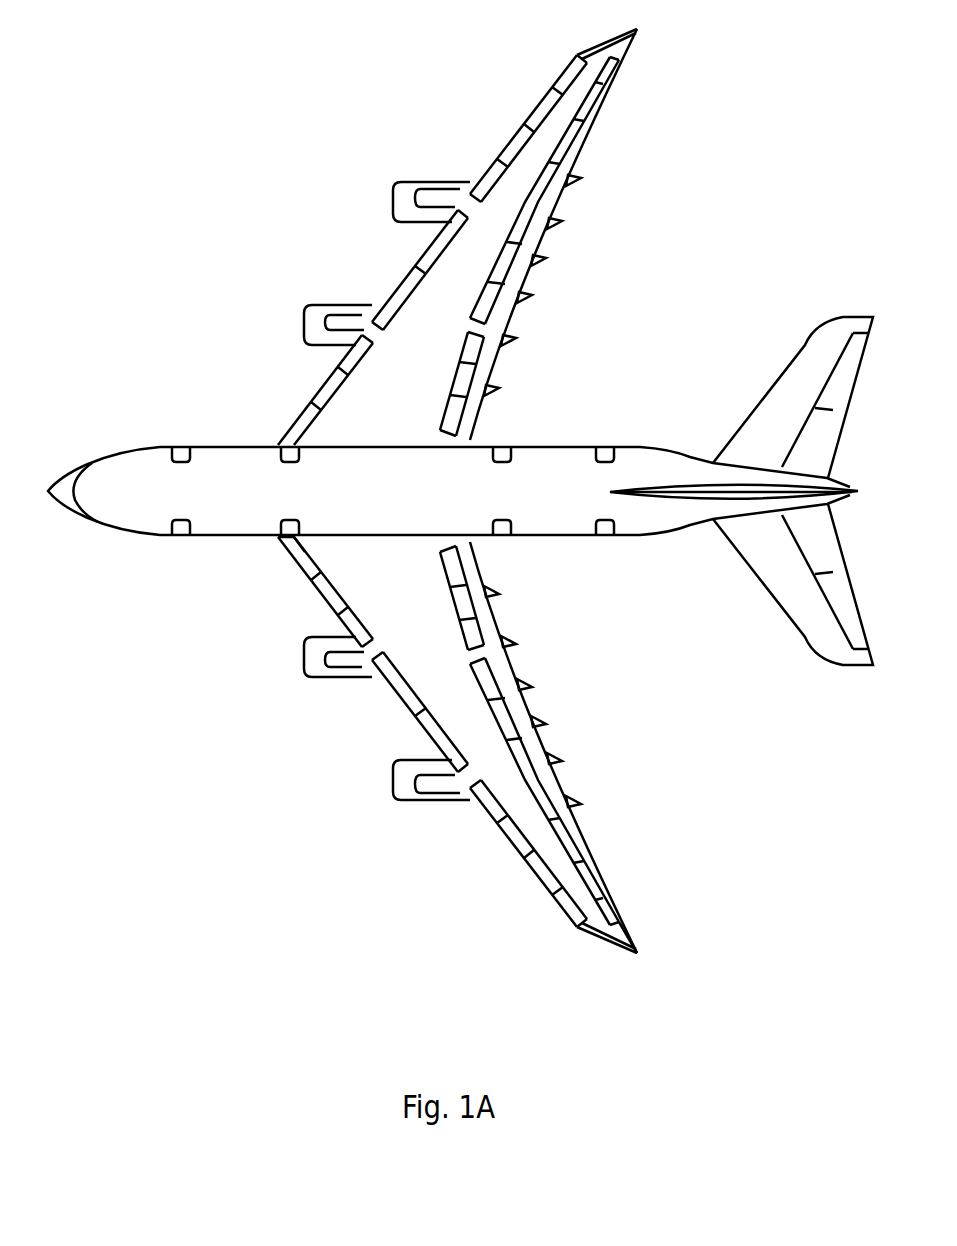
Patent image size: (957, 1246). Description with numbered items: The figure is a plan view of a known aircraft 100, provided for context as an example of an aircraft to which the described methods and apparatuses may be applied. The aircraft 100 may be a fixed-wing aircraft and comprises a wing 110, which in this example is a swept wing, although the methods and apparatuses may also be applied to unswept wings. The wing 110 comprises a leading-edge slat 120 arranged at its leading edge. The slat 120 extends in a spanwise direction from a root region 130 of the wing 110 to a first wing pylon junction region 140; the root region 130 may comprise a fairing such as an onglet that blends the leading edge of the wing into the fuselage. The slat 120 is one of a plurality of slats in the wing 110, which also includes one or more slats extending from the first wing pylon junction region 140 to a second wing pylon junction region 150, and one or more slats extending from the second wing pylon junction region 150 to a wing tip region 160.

The aircraft 100 is at (267, 245).
The wing 110 is at (432, 678).
The leading-edge slat 120 is at (326, 596).
The root region 130 is at (281, 537).
The first wing pylon junction region 140 is at (376, 648).
The second wing pylon junction region 150 is at (470, 776).
The wing tip region 160 is at (587, 925).